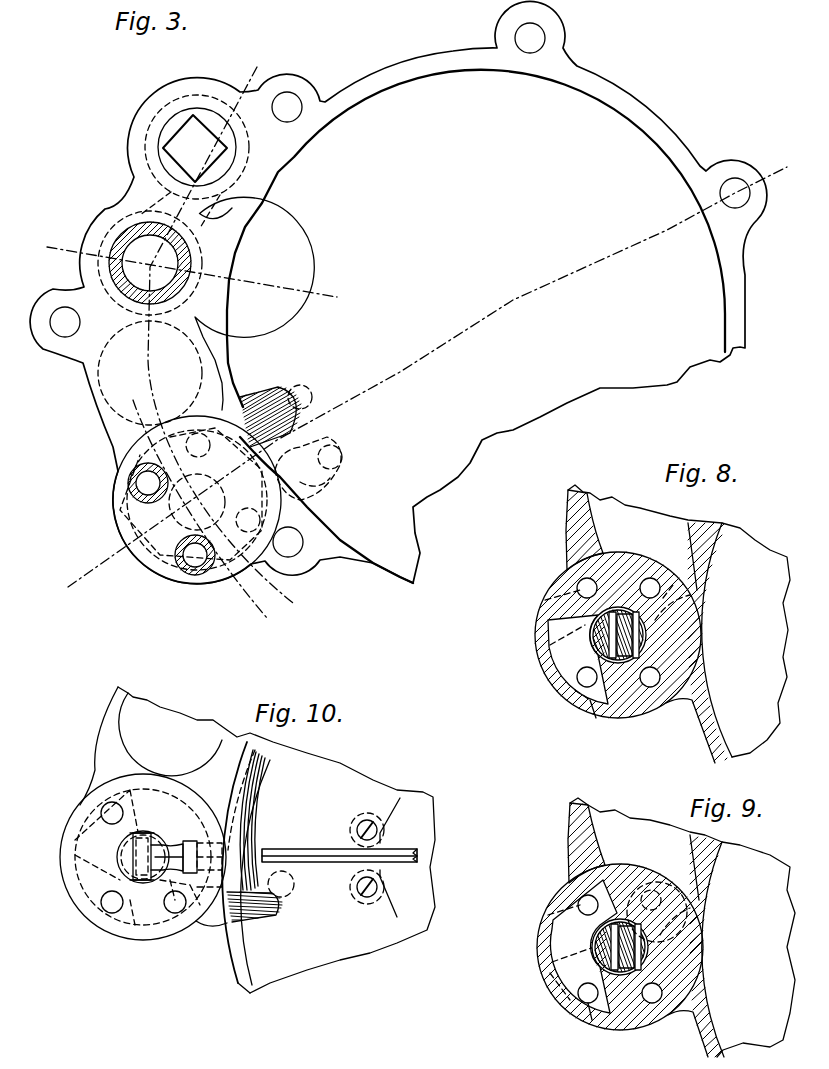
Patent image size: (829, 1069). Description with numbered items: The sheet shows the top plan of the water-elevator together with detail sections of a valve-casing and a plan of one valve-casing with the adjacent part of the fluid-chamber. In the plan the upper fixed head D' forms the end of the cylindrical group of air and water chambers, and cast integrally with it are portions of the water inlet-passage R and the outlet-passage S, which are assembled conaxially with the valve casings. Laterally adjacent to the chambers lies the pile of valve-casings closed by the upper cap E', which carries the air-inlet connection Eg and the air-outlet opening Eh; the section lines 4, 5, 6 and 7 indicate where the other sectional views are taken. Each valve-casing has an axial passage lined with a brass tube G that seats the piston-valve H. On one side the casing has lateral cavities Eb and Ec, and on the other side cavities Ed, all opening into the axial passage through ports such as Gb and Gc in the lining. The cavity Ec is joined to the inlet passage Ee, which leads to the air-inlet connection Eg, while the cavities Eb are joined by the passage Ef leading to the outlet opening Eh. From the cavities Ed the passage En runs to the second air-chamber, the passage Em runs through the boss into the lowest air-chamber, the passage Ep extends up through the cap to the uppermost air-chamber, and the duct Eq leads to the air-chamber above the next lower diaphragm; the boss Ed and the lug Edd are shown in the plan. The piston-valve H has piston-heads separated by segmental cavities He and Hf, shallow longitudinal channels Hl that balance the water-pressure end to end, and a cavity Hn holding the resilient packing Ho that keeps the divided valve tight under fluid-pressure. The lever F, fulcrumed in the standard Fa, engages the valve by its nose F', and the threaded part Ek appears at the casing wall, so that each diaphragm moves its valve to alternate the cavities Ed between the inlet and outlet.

In FIG. 3, the upper fixed head D' is at (398, 292).
In FIG. 3, the inlet-passage R is at (148, 133).
In FIG. 3, the outlet-passage S is at (131, 249).
In FIG. 8, the outlet-passage S is at (595, 513).
In FIG. 10, the outlet-passage S is at (118, 708).
In FIG. 3, the upper cap of the group of valve-casings E' is at (165, 500).
In FIG. 3, the air-inlet connection Eg is at (130, 484).
In FIG. 3, the air-outlet opening Eh is at (190, 563).
In FIG. 3, the lateral cavity Ed is at (303, 420).
In FIG. 8, the lateral cavity Ed is at (670, 584).
In FIG. 9, the lateral cavity Ed is at (683, 920).
In FIG. 10, the lateral cavity Ed is at (167, 912).
In FIG. 3, the passage Ep is at (306, 392).
In FIG. 8, the passage Ep is at (650, 580).
In FIG. 3, the passage En is at (343, 456).
In FIG. 8, the passage En is at (650, 687).
In FIG. 9, the passage En is at (652, 1004).
In FIG. 10, the passage En is at (180, 912).
In FIG. 3, the lug extension Edd is at (336, 482).
In FIG. 3, the section line 4 4 is at (68, 588).
In FIG. 3, the section line 5 5 5 5 is at (133, 401).
In FIG. 3, the section line 6 6 is at (47, 249).
In FIG. 3, the section line 7 7 is at (247, 57).
In FIG. 8, the air-inlet passage Ee is at (580, 581).
In FIG. 9, the air-inlet passage Ee is at (582, 897).
In FIG. 10, the air-inlet passage Ee is at (104, 805).
In FIG. 8, the lateral cavity Ec is at (567, 597).
In FIG. 9, the lateral cavity Ec is at (567, 913).
In FIG. 10, the lateral cavity Ec is at (83, 817).
In FIG. 8, the port Gb is at (597, 613).
In FIG. 9, the port Gc is at (598, 937).
In FIG. 8, the cavity Hn is at (603, 630).
In FIG. 9, the cavity Hn is at (607, 948).
In FIG. 8, the packing Ho is at (597, 647).
In FIG. 9, the packing Ho is at (590, 960).
In FIG. 8, the segmental cavity He is at (580, 683).
In FIG. 9, the segmental cavity Hf is at (563, 967).
In FIG. 8, the passage Ef is at (588, 685).
In FIG. 9, the passage Ef is at (588, 1005).
In FIG. 10, the passage Ef is at (103, 907).
In FIG. 8, the lateral cavity Eb is at (596, 700).
In FIG. 9, the lateral cavity Eb is at (553, 1002).
In FIG. 10, the lateral cavity Eb is at (112, 924).
In FIG. 9, the duct Eq is at (655, 887).
In FIG. 8, the brass tube G is at (647, 640).
In FIG. 9, the brass tube G is at (647, 943).
In FIG. 10, the longitudinal channel Hl is at (141, 831).
In FIG. 10, the piston-valve H is at (130, 856).
In FIG. 10, the lever F is at (167, 832).
In FIG. 10, the standard Fa is at (190, 842).
In FIG. 10, the nose F' is at (271, 928).
In FIG. 10, the threads Ek is at (186, 840).
In FIG. 10, the passage Em is at (288, 895).